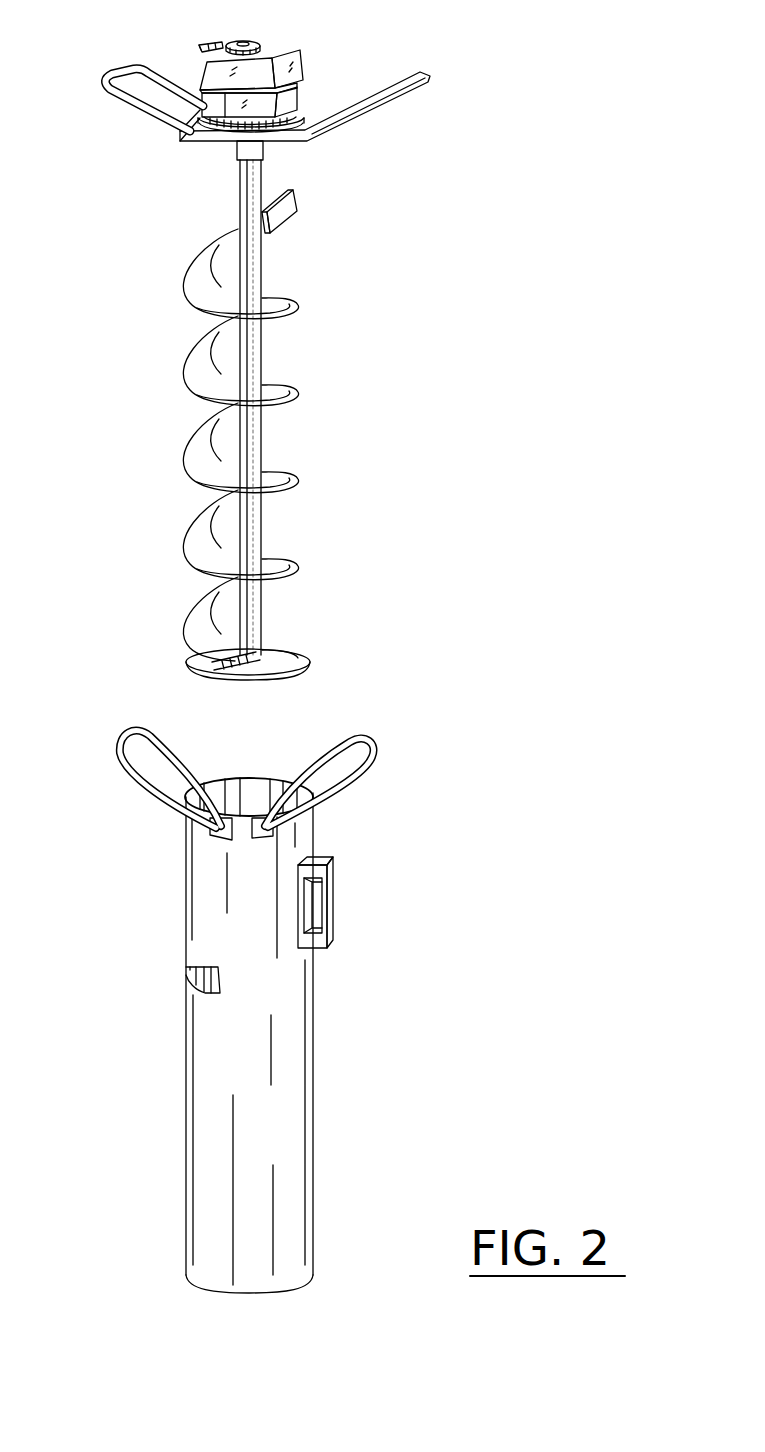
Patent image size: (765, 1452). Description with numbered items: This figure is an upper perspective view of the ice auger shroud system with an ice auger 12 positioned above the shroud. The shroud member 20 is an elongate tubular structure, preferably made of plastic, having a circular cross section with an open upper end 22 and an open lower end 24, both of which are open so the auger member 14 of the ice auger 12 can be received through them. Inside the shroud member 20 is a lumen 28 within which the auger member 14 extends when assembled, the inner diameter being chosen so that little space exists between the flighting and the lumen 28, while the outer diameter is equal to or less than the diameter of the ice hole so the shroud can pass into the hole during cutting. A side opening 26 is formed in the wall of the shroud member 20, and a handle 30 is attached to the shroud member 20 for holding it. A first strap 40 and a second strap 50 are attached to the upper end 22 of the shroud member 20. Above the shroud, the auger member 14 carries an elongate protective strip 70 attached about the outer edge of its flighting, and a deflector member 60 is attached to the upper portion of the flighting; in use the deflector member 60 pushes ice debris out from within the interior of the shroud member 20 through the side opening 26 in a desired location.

The ice auger 12 is at (195, 68).
The auger member 14 is at (260, 360).
The deflector member 60 is at (297, 208).
The protective strip 70 is at (196, 276).
The shroud member 20 is at (197, 1147).
The upper end 22 is at (219, 781).
The lower end 24 is at (200, 1286).
The side opening 26 is at (193, 983).
The lumen 28 is at (260, 800).
The handle 30 is at (333, 902).
The first strap 40 is at (366, 772).
The second strap 50 is at (143, 778).